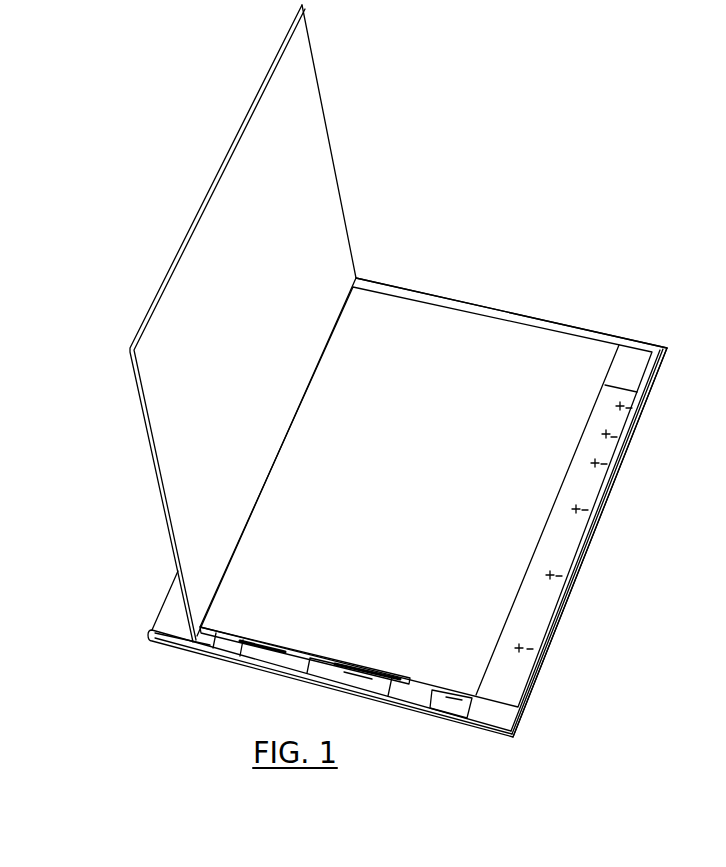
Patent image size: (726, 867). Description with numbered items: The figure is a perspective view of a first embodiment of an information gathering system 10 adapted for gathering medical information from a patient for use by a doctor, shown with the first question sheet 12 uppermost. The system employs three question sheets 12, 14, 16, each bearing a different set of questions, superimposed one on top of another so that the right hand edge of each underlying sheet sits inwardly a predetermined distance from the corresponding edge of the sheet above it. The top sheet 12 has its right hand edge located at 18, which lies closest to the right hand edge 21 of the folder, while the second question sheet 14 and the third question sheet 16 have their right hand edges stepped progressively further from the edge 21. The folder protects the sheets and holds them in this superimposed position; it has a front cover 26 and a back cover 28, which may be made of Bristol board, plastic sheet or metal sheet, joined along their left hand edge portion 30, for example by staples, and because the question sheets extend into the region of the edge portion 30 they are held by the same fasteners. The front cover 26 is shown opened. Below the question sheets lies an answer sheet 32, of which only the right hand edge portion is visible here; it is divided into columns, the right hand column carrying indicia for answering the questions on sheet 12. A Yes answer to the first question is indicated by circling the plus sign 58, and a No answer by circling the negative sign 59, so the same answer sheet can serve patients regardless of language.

The information gathering system 10 is at (598, 558).
The first question sheet 12 is at (590, 350).
The second question sheet 14 is at (383, 703).
The third question sheet 16 is at (322, 656).
The right hand edge of top sheet 18 is at (637, 392).
The right hand edge of folder 21 is at (610, 508).
The front cover 26 is at (243, 323).
The back cover 28 is at (490, 712).
The edge portion 30 is at (177, 618).
The answer sheet 32 is at (537, 610).
The plus sign 58 is at (607, 426).
The negative sign 59 is at (612, 443).